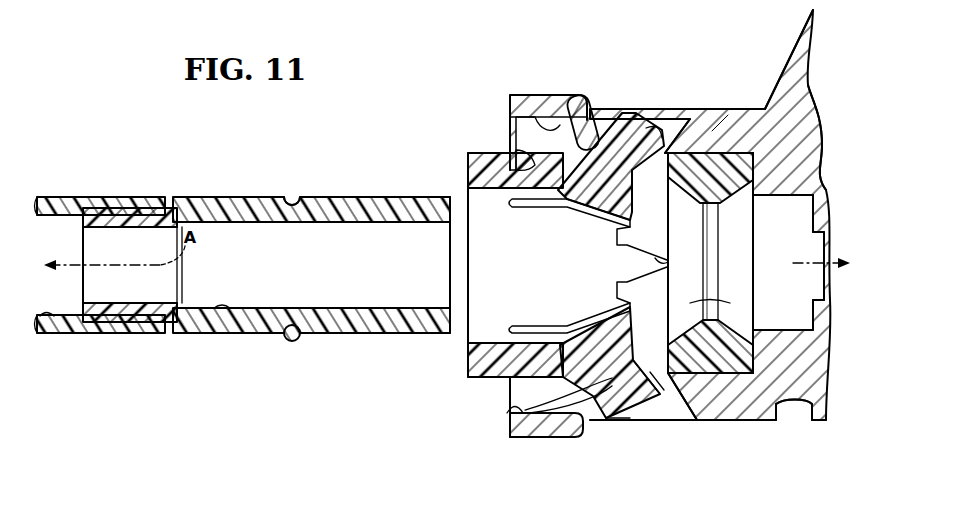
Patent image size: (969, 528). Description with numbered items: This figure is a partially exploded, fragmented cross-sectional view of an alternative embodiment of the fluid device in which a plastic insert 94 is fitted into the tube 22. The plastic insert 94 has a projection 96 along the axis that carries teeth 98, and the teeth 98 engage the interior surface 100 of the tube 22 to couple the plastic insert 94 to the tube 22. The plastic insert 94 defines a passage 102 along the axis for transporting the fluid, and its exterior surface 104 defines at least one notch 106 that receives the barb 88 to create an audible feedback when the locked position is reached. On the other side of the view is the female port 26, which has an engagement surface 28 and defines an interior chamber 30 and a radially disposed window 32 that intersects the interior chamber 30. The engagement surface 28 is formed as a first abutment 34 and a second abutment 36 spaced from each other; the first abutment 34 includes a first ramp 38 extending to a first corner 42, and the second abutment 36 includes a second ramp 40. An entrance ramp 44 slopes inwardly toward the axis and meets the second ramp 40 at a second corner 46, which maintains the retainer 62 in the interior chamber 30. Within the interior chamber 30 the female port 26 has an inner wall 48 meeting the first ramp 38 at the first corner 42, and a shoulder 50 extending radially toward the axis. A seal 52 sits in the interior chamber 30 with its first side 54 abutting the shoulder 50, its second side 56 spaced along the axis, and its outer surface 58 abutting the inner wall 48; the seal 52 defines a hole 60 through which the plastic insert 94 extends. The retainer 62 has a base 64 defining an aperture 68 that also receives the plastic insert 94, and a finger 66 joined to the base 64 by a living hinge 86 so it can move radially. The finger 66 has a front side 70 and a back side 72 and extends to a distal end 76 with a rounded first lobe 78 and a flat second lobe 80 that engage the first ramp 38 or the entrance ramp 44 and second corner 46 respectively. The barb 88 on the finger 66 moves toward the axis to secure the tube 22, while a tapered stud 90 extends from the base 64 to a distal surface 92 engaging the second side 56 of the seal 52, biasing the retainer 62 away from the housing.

The tube 22 is at (39, 205).
The female port 26 is at (780, 421).
The engagement surface 28 is at (681, 119).
The interior chamber 30 is at (506, 416).
The window 32 is at (661, 94).
The first abutment 34 is at (684, 118).
The second abutment 36 is at (595, 100).
The first ramp 38 is at (696, 411).
The second ramp 40 is at (590, 420).
The first corner 42 is at (637, 113).
The entrance ramp 44 is at (545, 96).
The second corner 46 is at (578, 100).
The inner wall 48 is at (663, 372).
The shoulder 50 is at (745, 323).
The seal 52 is at (762, 172).
The first side 54 is at (755, 262).
The second side 56 is at (667, 172).
The outer surface 58 is at (718, 118).
The hole 60 is at (728, 226).
The retainer 62 is at (467, 152).
The base 64 is at (495, 157).
The finger 66 is at (622, 420).
The aperture 68 is at (468, 344).
The front side 70 is at (618, 331).
The back side 72 is at (512, 393).
The distal end 76 is at (637, 414).
The first lobe 78 is at (652, 408).
The second lobe 80 is at (604, 420).
The living hinge 86 is at (528, 170).
The barb 88 is at (610, 322).
The stud 90 is at (656, 286).
The distal surface 92 is at (672, 283).
The plastic insert 94 is at (205, 197).
The projection 96 is at (108, 212).
The teeth 98 is at (110, 323).
The interior surface 100 is at (50, 318).
The passage 102 is at (222, 309).
The exterior surface 104 is at (310, 334).
The notch 106 is at (290, 197).